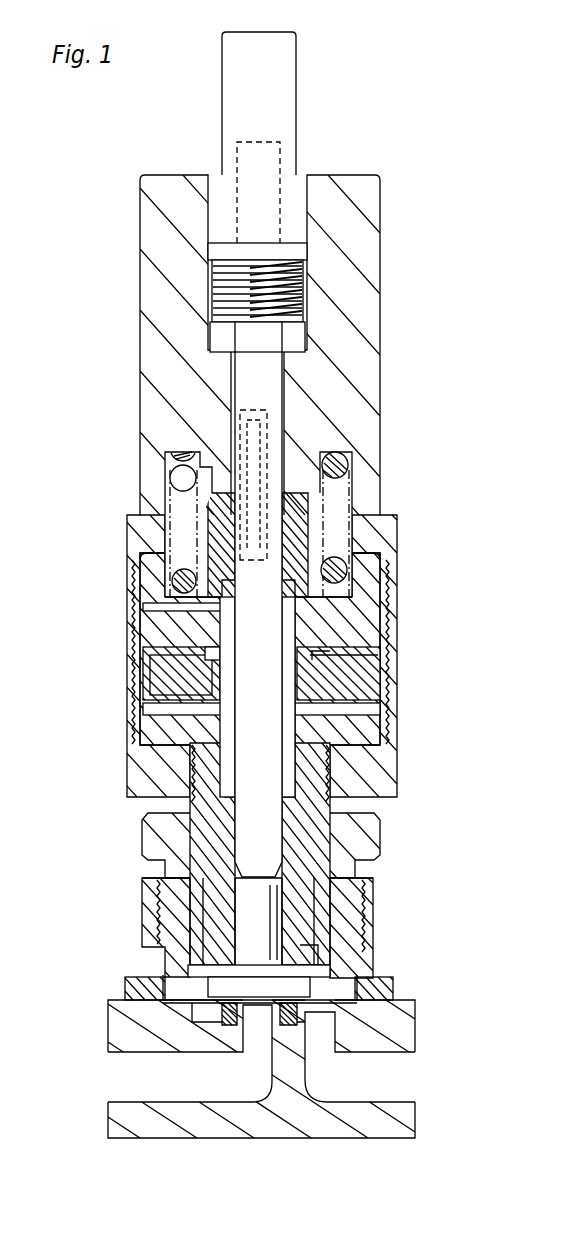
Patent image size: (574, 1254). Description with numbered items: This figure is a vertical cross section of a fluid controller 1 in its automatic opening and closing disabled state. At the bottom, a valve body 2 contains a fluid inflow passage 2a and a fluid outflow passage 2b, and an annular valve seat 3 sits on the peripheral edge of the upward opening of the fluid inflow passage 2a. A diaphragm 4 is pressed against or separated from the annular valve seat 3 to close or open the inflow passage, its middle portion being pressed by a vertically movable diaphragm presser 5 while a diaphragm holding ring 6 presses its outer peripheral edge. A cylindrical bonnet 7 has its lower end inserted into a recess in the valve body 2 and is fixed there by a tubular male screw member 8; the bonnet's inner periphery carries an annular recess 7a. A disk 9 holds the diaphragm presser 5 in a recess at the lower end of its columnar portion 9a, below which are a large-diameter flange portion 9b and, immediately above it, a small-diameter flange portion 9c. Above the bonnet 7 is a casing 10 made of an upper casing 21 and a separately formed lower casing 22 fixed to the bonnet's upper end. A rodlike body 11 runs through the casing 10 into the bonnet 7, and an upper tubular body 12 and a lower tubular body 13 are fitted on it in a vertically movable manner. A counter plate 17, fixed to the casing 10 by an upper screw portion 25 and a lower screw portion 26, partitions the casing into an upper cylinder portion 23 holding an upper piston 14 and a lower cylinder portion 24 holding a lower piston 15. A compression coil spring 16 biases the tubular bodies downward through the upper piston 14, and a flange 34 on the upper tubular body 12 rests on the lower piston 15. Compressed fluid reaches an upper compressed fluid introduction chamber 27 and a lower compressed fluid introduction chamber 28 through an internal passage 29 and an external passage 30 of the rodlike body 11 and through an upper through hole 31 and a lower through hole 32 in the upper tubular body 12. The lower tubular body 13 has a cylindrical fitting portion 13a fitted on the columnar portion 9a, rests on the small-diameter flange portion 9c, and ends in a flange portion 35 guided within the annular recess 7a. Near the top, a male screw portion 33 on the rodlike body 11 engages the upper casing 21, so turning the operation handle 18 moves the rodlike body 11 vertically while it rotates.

The fluid controller 1 is at (438, 413).
The valve body 2 is at (412, 1012).
The fluid inflow passage 2a is at (130, 1076).
The fluid outflow passage 2b is at (398, 1082).
The annular valve seat 3 is at (215, 1028).
The diaphragm 4 is at (300, 1030).
The diaphragm presser 5 is at (330, 995).
The diaphragm holding ring 6 is at (160, 985).
The bonnet 7 is at (350, 910).
The annular recess 7a is at (320, 945).
The tubular male screw member 8 is at (368, 843).
The disk 9 is at (175, 902).
The columnar portion 9a is at (190, 882).
The large-diameter flange portion 9b is at (135, 992).
The small-diameter flange portion 9c is at (180, 935).
The casing 10 is at (455, 800).
The rodlike body 11 is at (285, 742).
The upper tubular body 12 is at (128, 778).
The lower tubular body 13 is at (143, 842).
The cylindrical fitting portion 13a is at (315, 880).
The upper piston 14 is at (155, 595).
The lower piston 15 is at (163, 673).
The compression coil spring 16 is at (183, 525).
The counter plate 17 is at (395, 635).
The operation handle 18 is at (286, 99).
The upper casing 21 is at (153, 416).
The lower casing 22 is at (153, 743).
The upper cylinder portion 23 is at (145, 555).
The lower cylinder portion 24 is at (140, 663).
The upper screw portion 25 is at (383, 578).
The lower screw portion 26 is at (393, 680).
The upper compressed fluid introduction chamber 27 is at (163, 610).
The lower compressed fluid introduction chamber 28 is at (155, 707).
The internal passage 29 is at (263, 510).
The external passage 30 is at (192, 625).
The upper through hole 31 is at (380, 612).
The lower through hole 32 is at (388, 710).
The male screw portion 33 is at (298, 293).
The flange 34 is at (345, 656).
The flange portion 35 is at (300, 968).